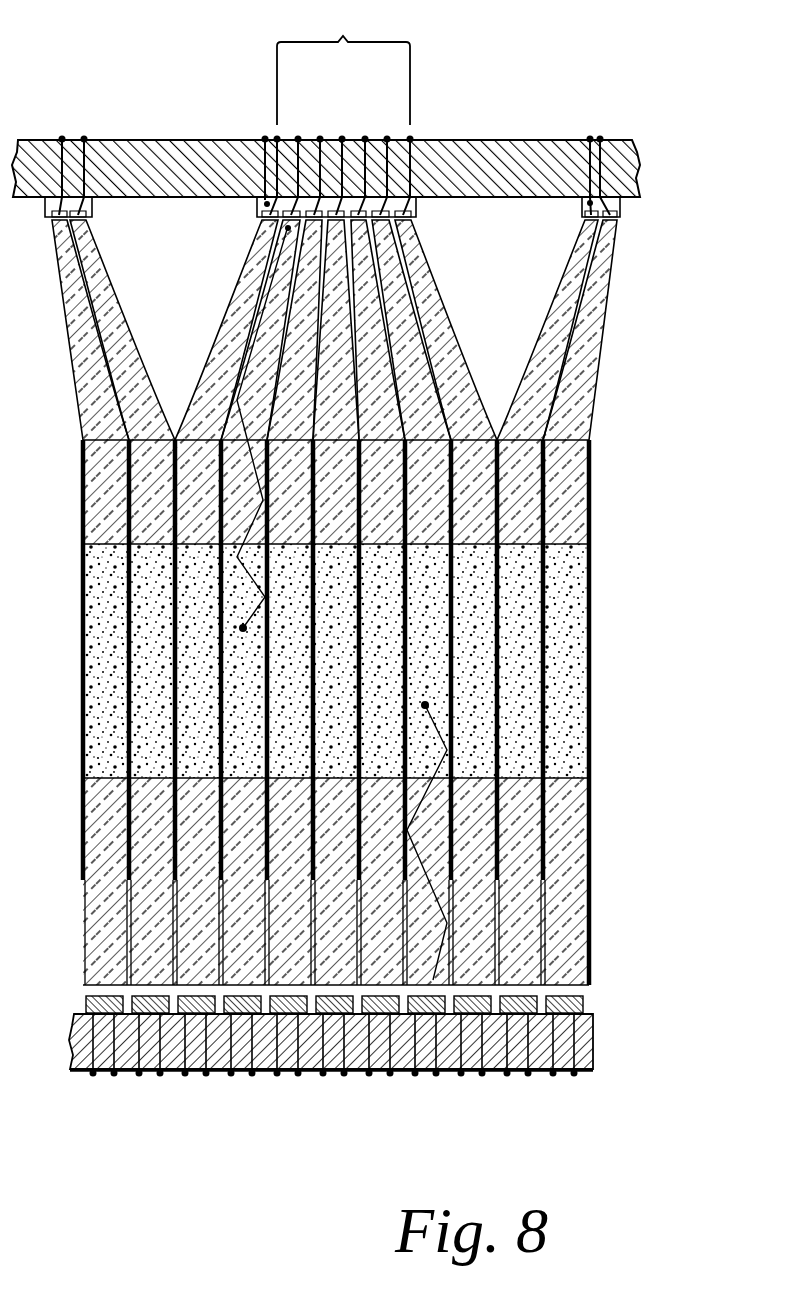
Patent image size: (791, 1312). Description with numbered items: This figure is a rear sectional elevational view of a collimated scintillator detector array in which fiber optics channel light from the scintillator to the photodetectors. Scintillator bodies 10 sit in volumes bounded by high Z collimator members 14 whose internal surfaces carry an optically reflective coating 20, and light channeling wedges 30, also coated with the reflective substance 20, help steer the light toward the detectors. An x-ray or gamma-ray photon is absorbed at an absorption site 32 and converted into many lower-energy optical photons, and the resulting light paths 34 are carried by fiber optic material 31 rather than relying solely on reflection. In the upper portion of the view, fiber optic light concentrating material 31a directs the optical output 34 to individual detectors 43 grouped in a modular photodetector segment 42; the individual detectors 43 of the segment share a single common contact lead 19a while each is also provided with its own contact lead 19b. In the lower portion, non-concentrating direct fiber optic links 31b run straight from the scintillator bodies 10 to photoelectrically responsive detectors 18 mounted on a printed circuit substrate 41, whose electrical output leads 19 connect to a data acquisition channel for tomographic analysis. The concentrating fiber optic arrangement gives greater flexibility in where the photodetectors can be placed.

The scintillator body 10 is at (92, 608).
The collimator member 14 is at (82, 795).
The photoelectrically responsive detector 18 is at (585, 1005).
The electrical output lead 19 is at (88, 1060).
The common contact lead 19a is at (262, 139).
The contact lead 19b is at (344, 75).
The optically reflective coating 20 is at (545, 570).
The light channeling wedge 30 is at (93, 932).
The fiber optic material 31 is at (455, 335).
The fiber optic light concentrating material 31a is at (608, 330).
The direct fiber optic link 31b is at (580, 930).
The absorption site 32 is at (243, 632).
The light path 34 is at (237, 420).
The printed circuit substrate 41 is at (557, 148).
The modular photodetector 42 is at (306, 200).
The individual detector 43 is at (368, 195).